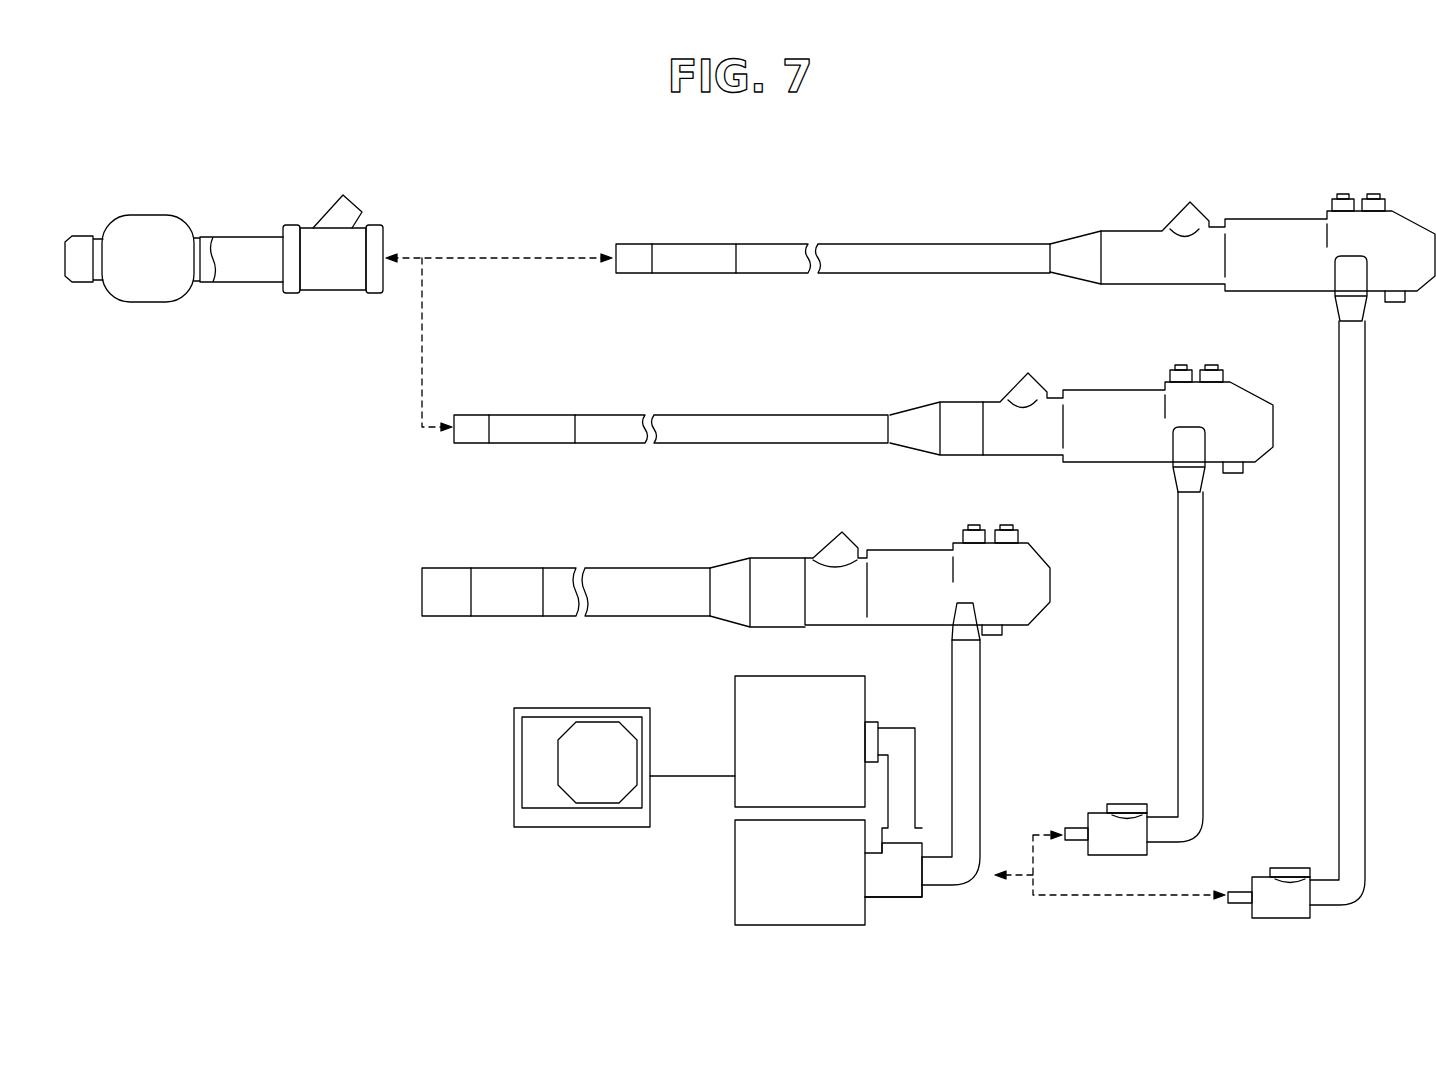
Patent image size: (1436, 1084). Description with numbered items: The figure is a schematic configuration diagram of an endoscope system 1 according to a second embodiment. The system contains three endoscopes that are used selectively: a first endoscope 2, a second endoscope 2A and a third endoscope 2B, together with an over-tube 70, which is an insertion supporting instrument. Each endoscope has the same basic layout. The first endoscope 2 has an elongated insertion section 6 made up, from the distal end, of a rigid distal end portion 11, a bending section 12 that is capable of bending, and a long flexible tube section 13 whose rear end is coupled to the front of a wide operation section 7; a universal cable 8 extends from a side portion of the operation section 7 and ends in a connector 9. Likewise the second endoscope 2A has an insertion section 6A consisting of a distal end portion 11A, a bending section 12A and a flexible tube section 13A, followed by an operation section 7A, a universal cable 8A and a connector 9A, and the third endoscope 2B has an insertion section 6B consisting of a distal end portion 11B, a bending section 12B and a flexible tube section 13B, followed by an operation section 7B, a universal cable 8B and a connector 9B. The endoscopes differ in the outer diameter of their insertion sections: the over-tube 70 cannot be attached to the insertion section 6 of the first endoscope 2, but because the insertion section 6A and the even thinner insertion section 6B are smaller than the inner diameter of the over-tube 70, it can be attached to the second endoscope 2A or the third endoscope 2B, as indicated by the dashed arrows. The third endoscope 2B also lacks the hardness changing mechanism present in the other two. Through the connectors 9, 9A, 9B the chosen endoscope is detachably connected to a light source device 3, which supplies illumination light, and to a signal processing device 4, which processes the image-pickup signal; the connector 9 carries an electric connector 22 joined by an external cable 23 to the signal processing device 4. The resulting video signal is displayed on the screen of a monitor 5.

The endoscope system 1 is at (306, 734).
The first endoscope 2 is at (736, 556).
The second endoscope 2A is at (856, 404).
The third endoscope 2B is at (1017, 233).
The light source device 3 is at (735, 851).
The signal processing device 4 is at (735, 710).
The monitor 5 is at (592, 827).
The first insertion section 6 is at (566, 544).
The second insertion section 6A is at (664, 379).
The third insertion section 6B is at (825, 209).
The operation section 7 is at (905, 546).
The operation section 7A is at (1106, 389).
The operation section 7B is at (1270, 216).
The universal cable 8 is at (980, 748).
The universal cable 8A is at (1203, 658).
The universal cable 8B is at (1365, 663).
The connector 9 is at (912, 898).
The connector 9A is at (1137, 856).
The connector 9B is at (1300, 919).
The distal end portion 11 is at (440, 568).
The distal end portion 11A is at (467, 415).
The distal end portion 11B is at (628, 244).
The bending section 12 is at (531, 568).
The bending section 12A is at (536, 415).
The bending section 12B is at (722, 244).
The flexible tube section 13 is at (626, 563).
The flexible tube section 13A is at (731, 399).
The flexible tube section 13B is at (893, 230).
The electric connector 22 is at (926, 843).
The external cable 23 is at (895, 728).
The over-tube 70 is at (258, 208).